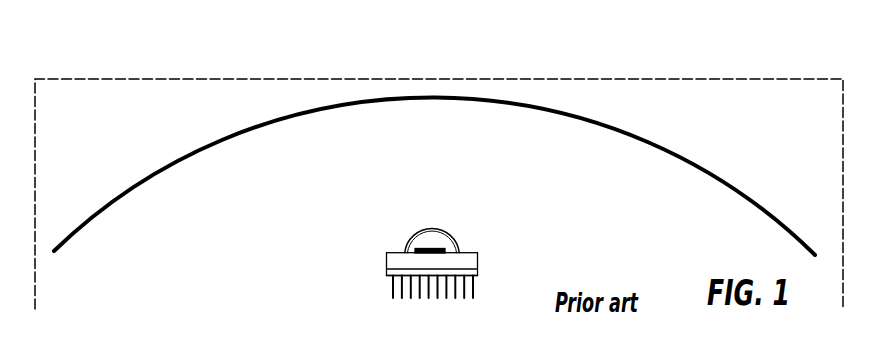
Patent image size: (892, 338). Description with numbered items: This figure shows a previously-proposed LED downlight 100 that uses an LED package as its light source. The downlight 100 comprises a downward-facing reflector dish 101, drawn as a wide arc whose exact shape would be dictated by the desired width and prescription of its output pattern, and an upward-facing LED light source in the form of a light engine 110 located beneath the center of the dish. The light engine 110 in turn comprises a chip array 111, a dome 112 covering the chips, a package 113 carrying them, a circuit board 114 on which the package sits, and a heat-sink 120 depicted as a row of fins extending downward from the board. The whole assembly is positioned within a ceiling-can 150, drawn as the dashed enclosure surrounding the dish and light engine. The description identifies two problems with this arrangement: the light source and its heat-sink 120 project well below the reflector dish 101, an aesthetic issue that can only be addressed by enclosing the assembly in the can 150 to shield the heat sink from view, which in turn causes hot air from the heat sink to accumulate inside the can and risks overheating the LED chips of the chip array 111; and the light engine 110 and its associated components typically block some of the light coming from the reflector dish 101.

The LED downlight 100 is at (434, 176).
The reflector dish 101 is at (115, 192).
The light engine 110 is at (438, 232).
The chip array 111 is at (405, 247).
The dome 112 is at (428, 245).
The package 113 is at (397, 260).
The circuit board 114 is at (478, 270).
The heat-sink 120 is at (388, 283).
The can 150 is at (135, 72).